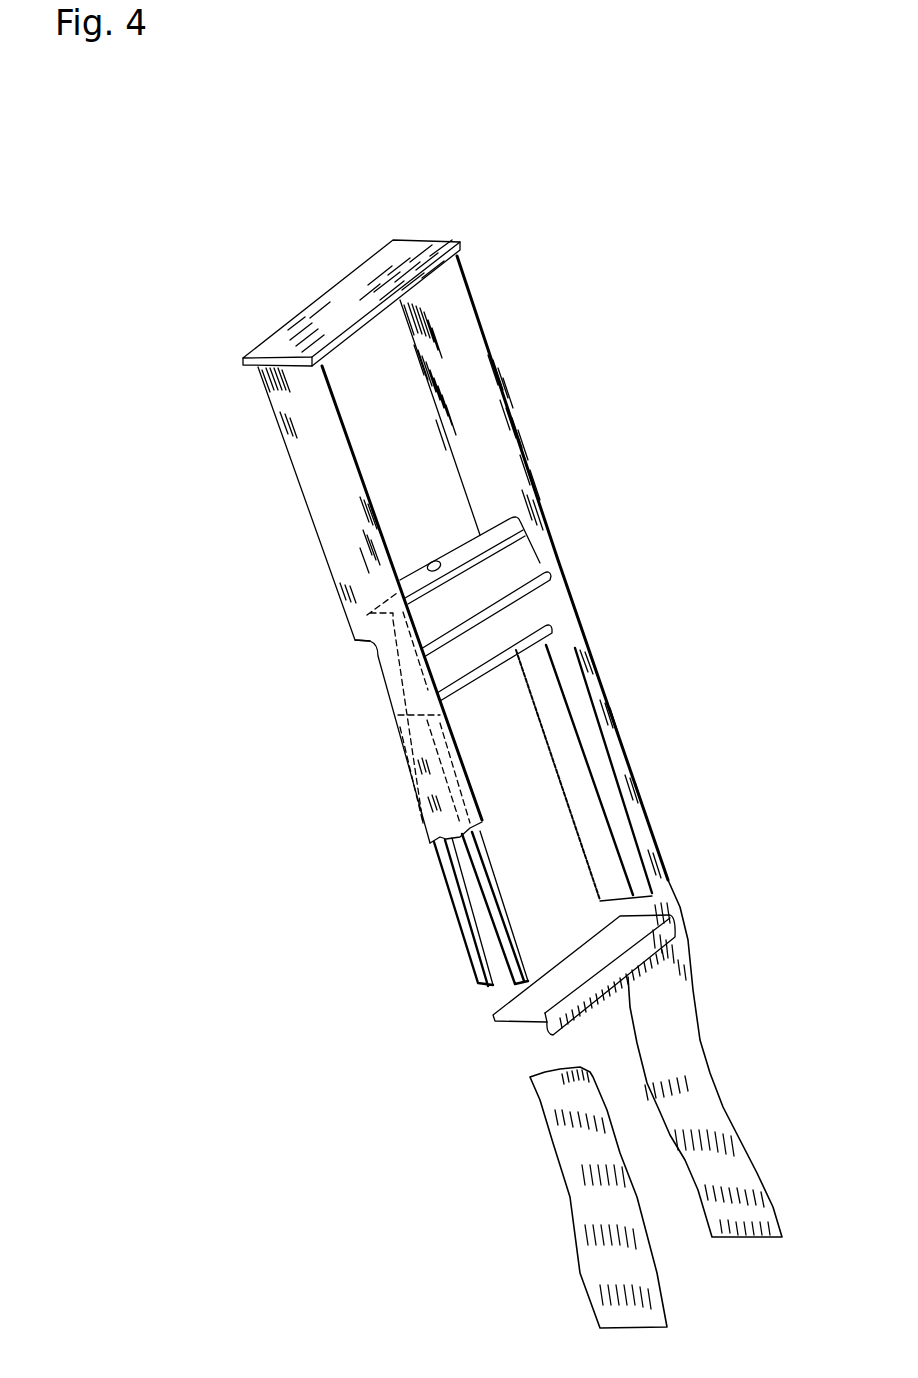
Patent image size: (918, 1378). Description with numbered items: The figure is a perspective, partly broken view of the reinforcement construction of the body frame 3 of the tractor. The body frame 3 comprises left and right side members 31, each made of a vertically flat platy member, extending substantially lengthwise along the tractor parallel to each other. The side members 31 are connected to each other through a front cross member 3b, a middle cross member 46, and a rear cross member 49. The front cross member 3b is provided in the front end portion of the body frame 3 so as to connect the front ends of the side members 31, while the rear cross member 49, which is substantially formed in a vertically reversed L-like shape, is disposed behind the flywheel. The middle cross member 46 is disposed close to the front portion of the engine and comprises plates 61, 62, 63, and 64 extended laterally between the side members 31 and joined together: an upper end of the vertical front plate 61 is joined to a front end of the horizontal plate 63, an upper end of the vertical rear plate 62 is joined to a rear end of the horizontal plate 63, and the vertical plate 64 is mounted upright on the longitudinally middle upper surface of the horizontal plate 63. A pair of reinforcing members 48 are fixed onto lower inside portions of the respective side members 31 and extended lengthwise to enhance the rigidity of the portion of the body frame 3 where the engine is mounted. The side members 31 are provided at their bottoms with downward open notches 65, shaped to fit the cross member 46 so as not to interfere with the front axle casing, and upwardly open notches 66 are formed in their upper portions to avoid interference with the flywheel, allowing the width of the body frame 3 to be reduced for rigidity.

The body frame 3 is at (489, 621).
The front cross member 3b is at (330, 318).
The side member 31 is at (303, 435).
The middle cross member 46 is at (487, 606).
The reinforcing member 48 is at (463, 890).
The rear cross member 49 is at (577, 973).
The vertical front plate 61 is at (455, 548).
The vertical rear plate 62 is at (495, 677).
The horizontal plate 63 is at (525, 612).
The vertical plate 64 is at (418, 687).
The downward open notch 65 is at (357, 680).
The upwardly open notch 66 is at (675, 842).